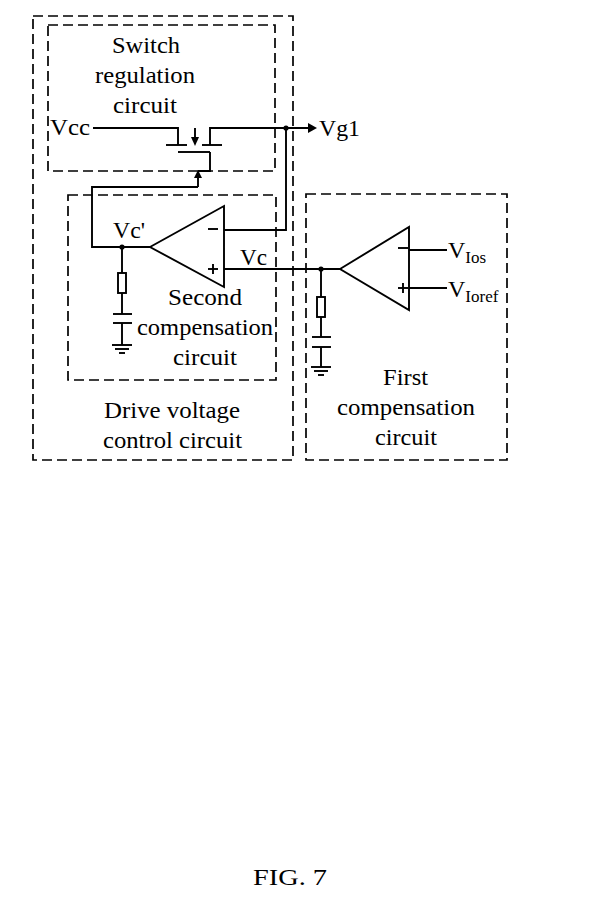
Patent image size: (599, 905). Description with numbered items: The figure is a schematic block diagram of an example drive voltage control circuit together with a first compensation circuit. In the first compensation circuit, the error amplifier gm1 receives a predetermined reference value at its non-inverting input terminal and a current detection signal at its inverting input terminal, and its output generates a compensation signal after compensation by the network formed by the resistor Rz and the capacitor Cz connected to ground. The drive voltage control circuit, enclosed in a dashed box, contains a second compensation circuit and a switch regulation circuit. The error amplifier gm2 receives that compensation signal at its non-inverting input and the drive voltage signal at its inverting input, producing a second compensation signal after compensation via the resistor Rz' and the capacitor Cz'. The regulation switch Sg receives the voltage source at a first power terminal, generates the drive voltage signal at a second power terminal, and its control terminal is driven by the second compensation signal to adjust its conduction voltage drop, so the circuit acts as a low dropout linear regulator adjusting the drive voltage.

The regulation switch Sg is at (241, 134).
The error amplifier gm1 is at (393, 268).
The error amplifier gm2 is at (187, 246).
The resistor Rz is at (337, 303).
The capacitor Cz is at (335, 353).
The resistor Rz' is at (102, 280).
The capacitor Cz' is at (105, 327).